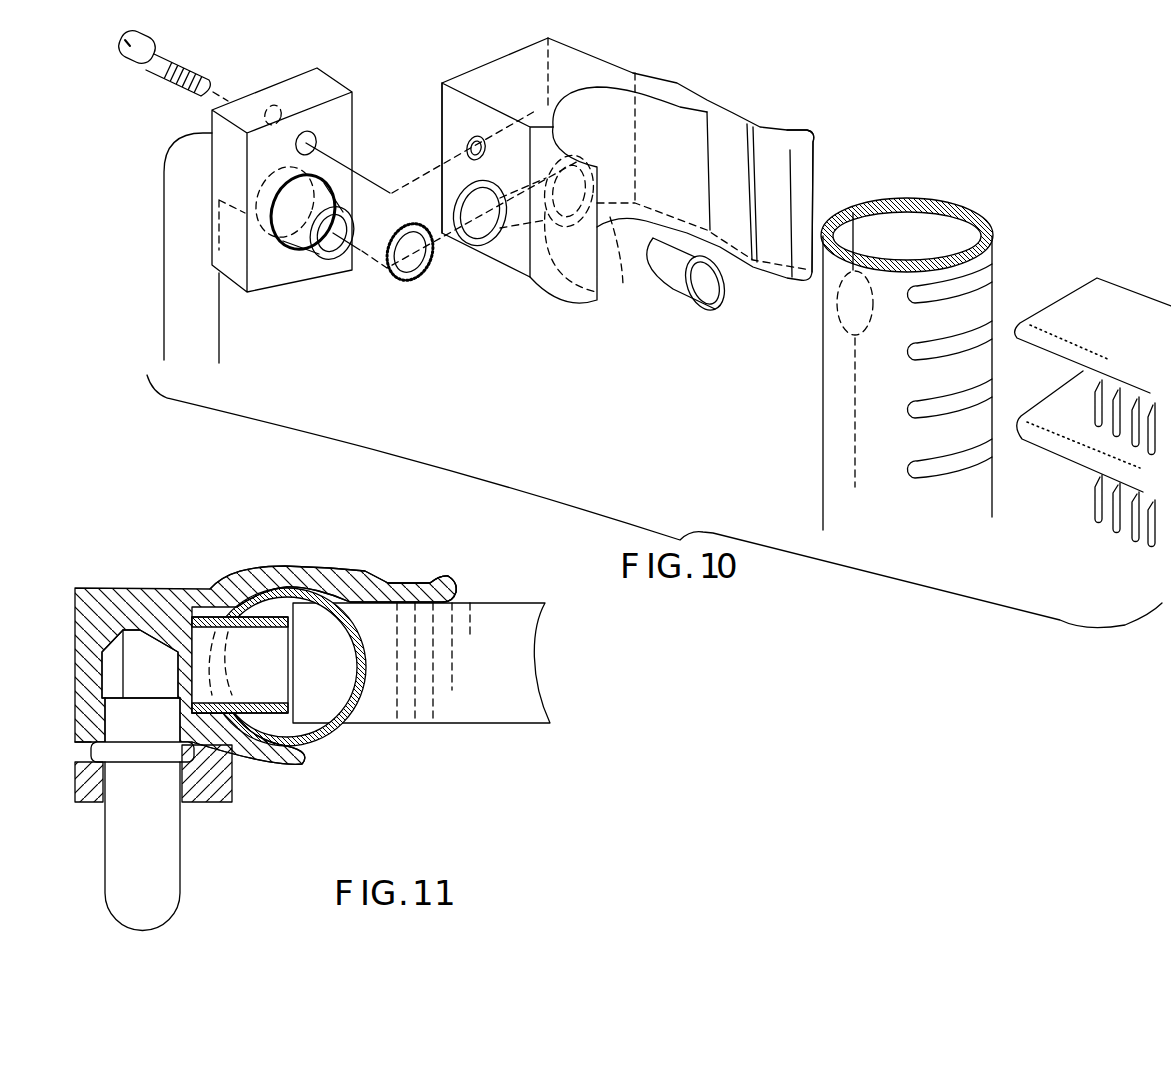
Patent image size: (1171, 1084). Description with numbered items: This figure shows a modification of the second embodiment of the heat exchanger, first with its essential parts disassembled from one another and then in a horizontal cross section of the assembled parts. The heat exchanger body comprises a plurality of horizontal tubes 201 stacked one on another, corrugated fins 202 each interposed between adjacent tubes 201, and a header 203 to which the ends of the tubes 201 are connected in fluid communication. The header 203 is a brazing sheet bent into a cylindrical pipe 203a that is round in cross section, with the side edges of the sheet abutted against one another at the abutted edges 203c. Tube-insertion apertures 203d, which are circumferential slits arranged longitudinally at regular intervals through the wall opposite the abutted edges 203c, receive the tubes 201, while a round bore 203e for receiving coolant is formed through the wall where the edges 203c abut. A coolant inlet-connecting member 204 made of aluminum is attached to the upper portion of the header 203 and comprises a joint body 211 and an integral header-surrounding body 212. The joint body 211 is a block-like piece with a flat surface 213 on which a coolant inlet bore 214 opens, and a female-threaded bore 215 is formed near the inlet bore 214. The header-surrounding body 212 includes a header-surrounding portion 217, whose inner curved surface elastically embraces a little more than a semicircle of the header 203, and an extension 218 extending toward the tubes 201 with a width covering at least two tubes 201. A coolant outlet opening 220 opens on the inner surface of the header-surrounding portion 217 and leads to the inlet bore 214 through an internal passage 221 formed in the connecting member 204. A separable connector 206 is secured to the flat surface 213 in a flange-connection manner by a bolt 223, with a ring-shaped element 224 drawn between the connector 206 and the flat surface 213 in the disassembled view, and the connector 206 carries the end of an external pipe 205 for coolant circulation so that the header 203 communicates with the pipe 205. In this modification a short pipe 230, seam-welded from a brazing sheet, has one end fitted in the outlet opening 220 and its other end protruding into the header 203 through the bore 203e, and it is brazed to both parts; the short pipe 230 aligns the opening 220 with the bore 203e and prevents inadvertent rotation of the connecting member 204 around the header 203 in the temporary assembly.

In FIG. 10, the horizontal tubes 201 is at (1055, 432).
In FIG. 11, the horizontal tubes 201 is at (498, 713).
In FIG. 10, the corrugated fins 202 is at (1090, 503).
In FIG. 11, the corrugated fins 202 is at (437, 693).
In FIG. 10, the header 203 is at (837, 455).
In FIG. 11, the header 203 is at (349, 706).
In FIG. 10, the cylindrical pipe 203a is at (830, 392).
In FIG. 10, the abutted edges 203c is at (868, 193).
In FIG. 10, the tube-insertion apertures 203d is at (953, 337).
In FIG. 10, the round bore 203e is at (838, 320).
In FIG. 10, the coolant inlet-connecting member 204 is at (810, 75).
In FIG. 11, the coolant inlet-connecting member 204 is at (139, 574).
In FIG. 10, the external pipe 205 is at (172, 233).
In FIG. 11, the external pipe 205 is at (194, 852).
In FIG. 10, the separable connector 206 is at (280, 94).
In FIG. 11, the separable connector 206 is at (70, 796).
In FIG. 10, the joint body 211 is at (470, 83).
In FIG. 11, the joint body 211 is at (92, 621).
In FIG. 10, the header-surrounding body 212 is at (680, 87).
In FIG. 11, the header-surrounding body 212 is at (283, 565).
In FIG. 10, the flat surface 213 is at (443, 118).
In FIG. 10, the coolant inlet bore 214 is at (490, 222).
In FIG. 11, the coolant inlet bore 214 is at (100, 711).
In FIG. 10, the female-threaded bore 215 is at (466, 150).
In FIG. 10, the header-surrounding portion 217 is at (600, 120).
In FIG. 11, the header-surrounding portion 217 is at (249, 588).
In FIG. 10, the extension 218 is at (787, 128).
In FIG. 11, the extension 218 is at (402, 587).
In FIG. 10, the coolant outlet opening 220 is at (629, 269).
In FIG. 11, the coolant outlet opening 220 is at (207, 626).
In FIG. 10, the internal passage 221 is at (523, 255).
In FIG. 11, the internal passage 221 is at (141, 673).
In FIG. 10, the bolt 223 is at (158, 70).
In FIG. 10, the washer 224 is at (415, 283).
In FIG. 11, the washer 224 is at (88, 743).
In FIG. 10, the short pipe 230 is at (668, 298).
In FIG. 11, the short pipe 230 is at (271, 714).